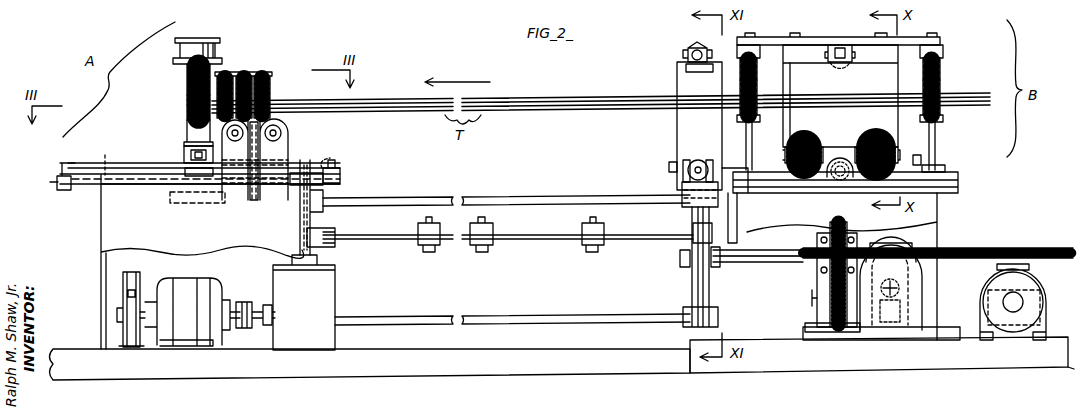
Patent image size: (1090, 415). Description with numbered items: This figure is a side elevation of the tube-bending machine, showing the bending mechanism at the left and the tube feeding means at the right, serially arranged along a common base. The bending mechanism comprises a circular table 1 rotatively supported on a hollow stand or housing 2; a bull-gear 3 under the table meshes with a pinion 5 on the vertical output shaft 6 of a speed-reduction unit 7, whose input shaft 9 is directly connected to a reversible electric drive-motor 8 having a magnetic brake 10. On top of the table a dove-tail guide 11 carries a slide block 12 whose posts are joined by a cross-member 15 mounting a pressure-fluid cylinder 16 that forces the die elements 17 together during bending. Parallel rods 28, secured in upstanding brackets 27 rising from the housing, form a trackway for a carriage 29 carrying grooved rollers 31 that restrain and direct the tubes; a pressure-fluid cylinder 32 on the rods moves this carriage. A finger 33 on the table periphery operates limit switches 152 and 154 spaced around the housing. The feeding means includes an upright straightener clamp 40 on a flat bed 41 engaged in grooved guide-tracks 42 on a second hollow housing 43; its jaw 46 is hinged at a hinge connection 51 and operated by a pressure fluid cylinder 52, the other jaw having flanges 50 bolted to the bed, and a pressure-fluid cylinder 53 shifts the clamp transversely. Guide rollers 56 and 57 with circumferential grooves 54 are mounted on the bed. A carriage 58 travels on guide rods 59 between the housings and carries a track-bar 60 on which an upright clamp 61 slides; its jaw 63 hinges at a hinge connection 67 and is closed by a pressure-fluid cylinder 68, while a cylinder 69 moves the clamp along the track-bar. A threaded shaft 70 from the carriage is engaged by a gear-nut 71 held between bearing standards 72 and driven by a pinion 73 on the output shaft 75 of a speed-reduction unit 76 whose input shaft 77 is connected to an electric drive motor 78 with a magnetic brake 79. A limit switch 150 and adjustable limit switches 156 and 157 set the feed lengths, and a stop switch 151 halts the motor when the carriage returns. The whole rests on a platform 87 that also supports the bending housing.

The circular table 1 is at (131, 163).
The hollow stand or housing 2 is at (110, 221).
The bull-gear 3 is at (104, 156).
The pinion 5 is at (322, 168).
The vertical output shaft 6 is at (300, 227).
The speed-reduction unit 7 is at (304, 302).
The reversible electric drive-motor 8 is at (187, 285).
The input shaft 9 is at (262, 300).
The magnetic brake 10 is at (123, 290).
The dove-tail guide 11 is at (180, 157).
The slide block 12 is at (187, 128).
The cross-member 15 is at (187, 79).
The pressure-fluid cylinder 16 is at (197, 45).
The die elements 17 is at (187, 108).
The upstanding brackets 27 is at (266, 186).
The parallel rods 28 is at (283, 140).
The carriage 29 is at (283, 130).
The rollers 31 is at (258, 75).
The pressure-fluid cylinder 32 is at (262, 125).
The finger 33 is at (58, 166).
The upright clamp 40 is at (840, 96).
The flat bed 41 is at (916, 172).
The grooved guide-tracks 42 is at (958, 178).
The hollow stand or housing 43 is at (940, 205).
The jaw 46 is at (797, 125).
The flanges 50 is at (790, 168).
The hinge connection 51 is at (898, 165).
The pressure fluid cylinder 52 is at (840, 37).
The pressure-fluid cylinder 53 is at (840, 158).
The circumferential grooves 54 is at (760, 86).
The guide rollers 56 is at (740, 72).
The guide rollers 57 is at (943, 65).
The carriage 58 is at (672, 285).
The guide rods 59 is at (468, 197).
The track-bar 60 is at (682, 185).
The upright clamp 61 is at (699, 126).
The jaw 63 is at (680, 82).
The hinge connection 67 is at (669, 166).
The pressure-fluid cylinder 68 is at (697, 47).
The pressure-fluid cylinder 69 is at (698, 160).
The shaft 70 is at (770, 262).
The gear-nut 71 is at (814, 233).
The bearing standards 72 is at (825, 237).
The pinion 73 is at (825, 300).
The output shaft 75 is at (868, 330).
The speed-reduction unit 76 is at (893, 330).
The input shaft 77 is at (905, 291).
The electric drive motor 78 is at (925, 268).
The magnetic brake 79 is at (920, 304).
The platform 87 is at (325, 360).
The limit switch 150 is at (598, 252).
The stop switch 151 is at (693, 235).
The limit switch 152 is at (341, 180).
The limit switch 154 is at (136, 204).
The adjustable limit switch 156 is at (435, 252).
The adjustable limit switch 157 is at (488, 252).